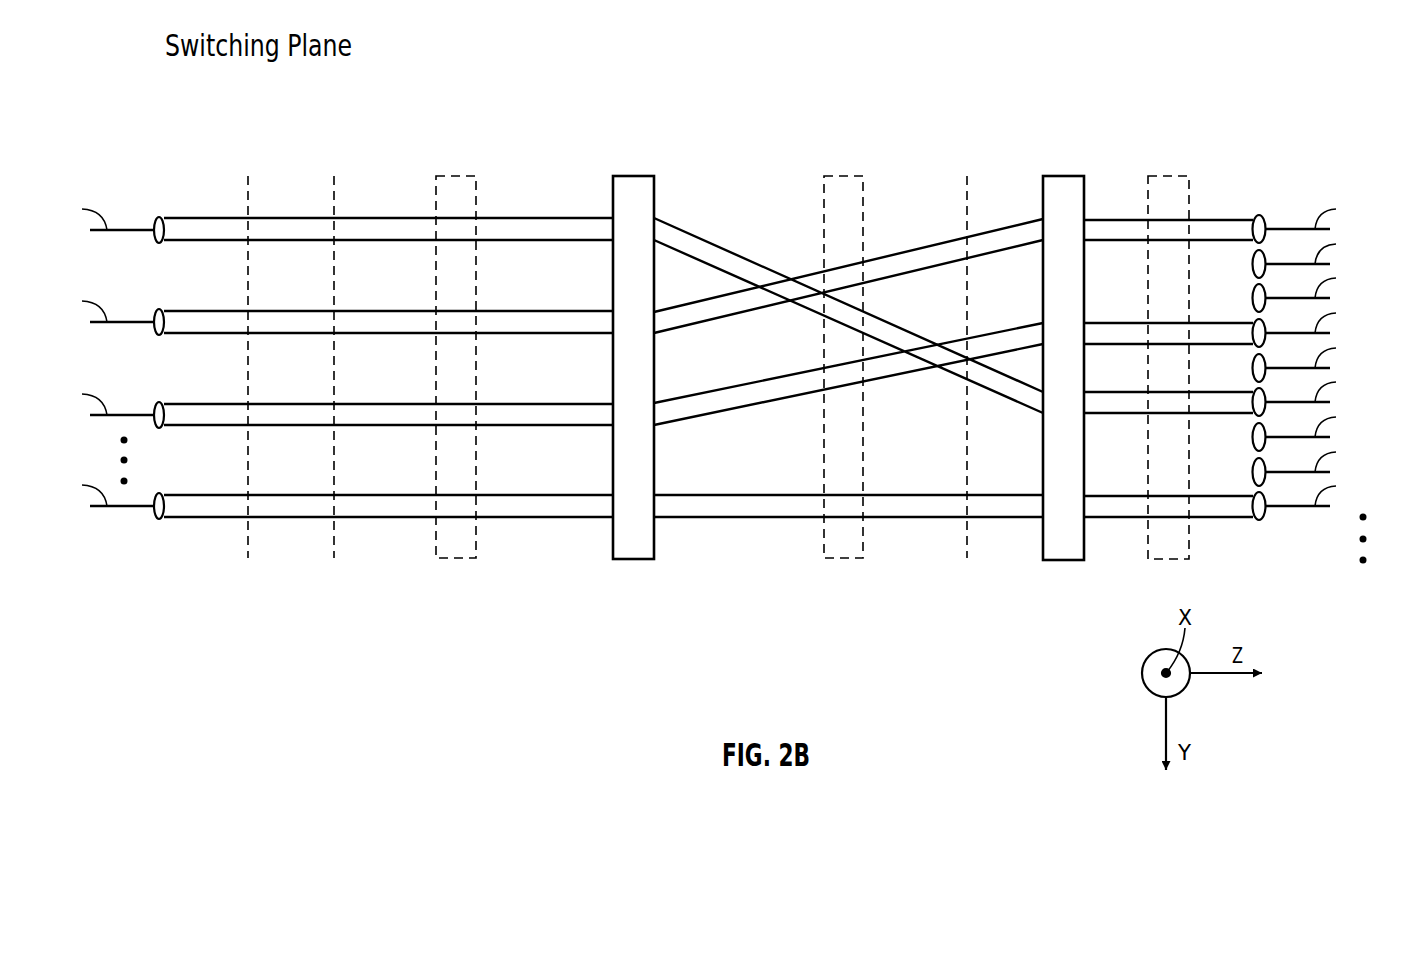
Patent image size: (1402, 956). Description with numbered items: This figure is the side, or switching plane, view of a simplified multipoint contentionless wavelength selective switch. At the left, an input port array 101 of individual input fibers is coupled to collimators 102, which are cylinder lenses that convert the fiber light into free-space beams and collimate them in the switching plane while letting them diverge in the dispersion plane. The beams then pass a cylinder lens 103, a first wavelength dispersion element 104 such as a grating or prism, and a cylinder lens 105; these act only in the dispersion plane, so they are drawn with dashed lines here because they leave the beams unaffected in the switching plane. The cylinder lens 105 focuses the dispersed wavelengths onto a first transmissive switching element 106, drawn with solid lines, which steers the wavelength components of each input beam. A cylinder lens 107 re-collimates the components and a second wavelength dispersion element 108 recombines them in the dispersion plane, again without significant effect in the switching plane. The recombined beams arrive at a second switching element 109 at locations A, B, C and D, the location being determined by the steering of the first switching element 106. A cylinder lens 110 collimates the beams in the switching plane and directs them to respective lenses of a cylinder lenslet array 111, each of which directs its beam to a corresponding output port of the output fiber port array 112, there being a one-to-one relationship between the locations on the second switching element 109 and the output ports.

The input port array 101 is at (130, 225).
The collimators 102 is at (158, 210).
The cylinder lens 103 is at (248, 166).
The first wavelength dispersion element 104 is at (336, 166).
The cylinder lens 105 is at (456, 165).
The first transmissive switching element 106 is at (634, 166).
The cylinder lens 107 is at (845, 166).
The second wavelength dispersion element 108 is at (968, 166).
The second switching element 109 is at (1065, 166).
The cylinder lens 110 is at (1170, 166).
The cylinder lenslet array 111 is at (1260, 202).
The output fiber port array 112 is at (1296, 222).